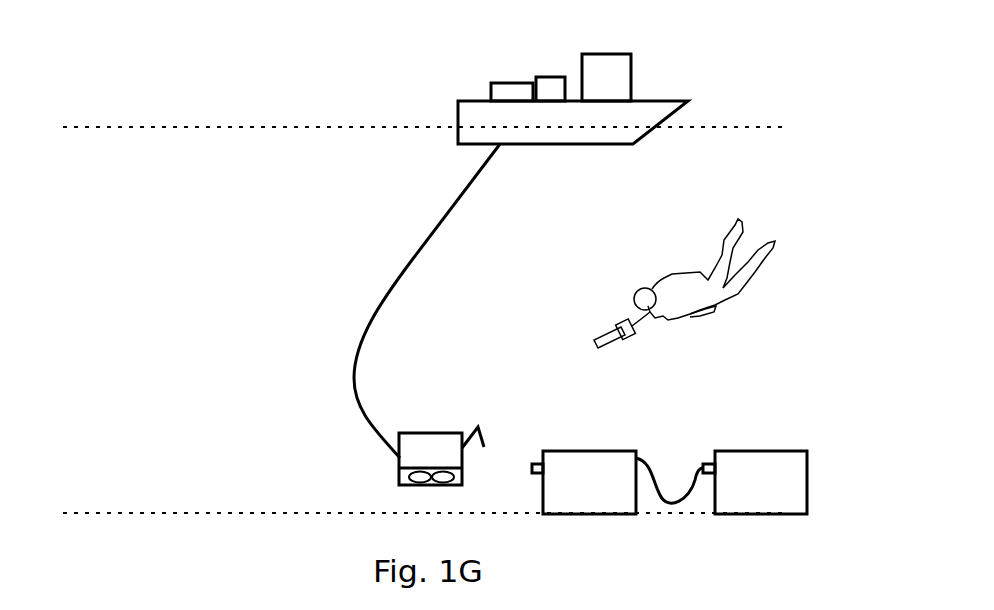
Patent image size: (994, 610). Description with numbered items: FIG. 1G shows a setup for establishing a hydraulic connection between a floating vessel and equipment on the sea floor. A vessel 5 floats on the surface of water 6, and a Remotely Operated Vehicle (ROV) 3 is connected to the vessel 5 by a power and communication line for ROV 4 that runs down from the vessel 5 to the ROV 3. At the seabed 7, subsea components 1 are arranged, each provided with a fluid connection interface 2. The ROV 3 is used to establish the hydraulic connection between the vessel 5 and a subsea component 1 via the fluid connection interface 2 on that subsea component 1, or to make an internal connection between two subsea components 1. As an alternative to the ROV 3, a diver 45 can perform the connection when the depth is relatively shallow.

The subsea component 1 is at (607, 451).
The fluid connection interface 2 is at (540, 462).
The Remotely Operated Vehicle (ROV) 3 is at (422, 432).
The power and communication line for ROV 4 is at (400, 276).
The vessel 5 is at (657, 100).
The surface of water 6 is at (262, 127).
The seabed 7 is at (262, 513).
The diver 45 is at (678, 275).